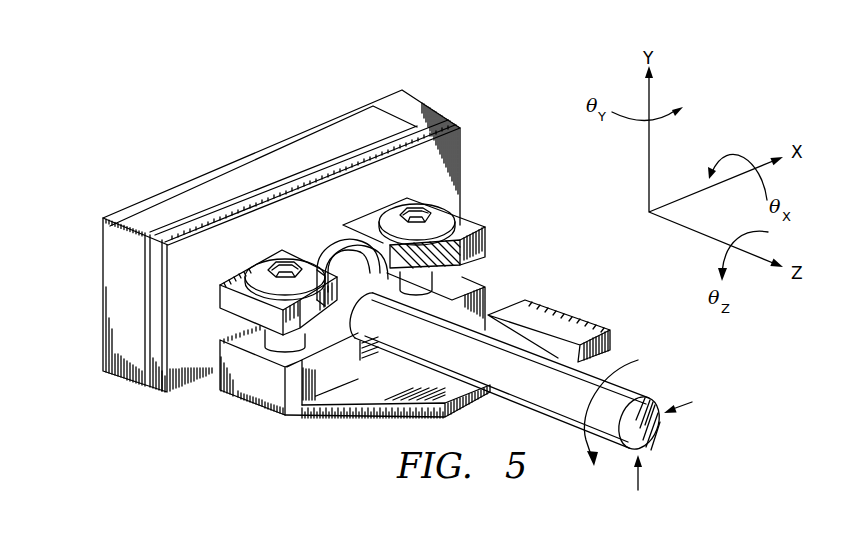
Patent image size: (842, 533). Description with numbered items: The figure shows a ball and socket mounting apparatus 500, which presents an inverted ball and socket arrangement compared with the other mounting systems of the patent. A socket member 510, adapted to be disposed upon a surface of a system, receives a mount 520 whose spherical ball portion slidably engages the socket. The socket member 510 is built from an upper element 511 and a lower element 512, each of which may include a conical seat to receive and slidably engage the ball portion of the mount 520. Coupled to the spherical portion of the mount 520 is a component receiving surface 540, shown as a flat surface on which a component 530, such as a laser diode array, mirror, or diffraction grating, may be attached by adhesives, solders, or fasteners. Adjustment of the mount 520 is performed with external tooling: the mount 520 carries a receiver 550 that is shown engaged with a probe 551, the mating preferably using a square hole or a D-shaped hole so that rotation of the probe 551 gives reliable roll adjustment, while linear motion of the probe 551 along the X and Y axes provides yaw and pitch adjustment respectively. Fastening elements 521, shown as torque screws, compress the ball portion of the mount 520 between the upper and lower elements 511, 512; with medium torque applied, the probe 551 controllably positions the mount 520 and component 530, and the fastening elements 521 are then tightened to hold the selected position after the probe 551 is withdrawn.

The mounting apparatus 500 is at (497, 72).
The socket member 510 is at (275, 402).
The upper element 511 is at (227, 298).
The lower element 512 is at (327, 373).
The mount 520 is at (380, 236).
The fastening elements 521 is at (258, 270).
The component 530 is at (117, 259).
The component receiving surface 540 is at (201, 214).
The receiver 550 is at (327, 242).
The probe 551 is at (650, 431).